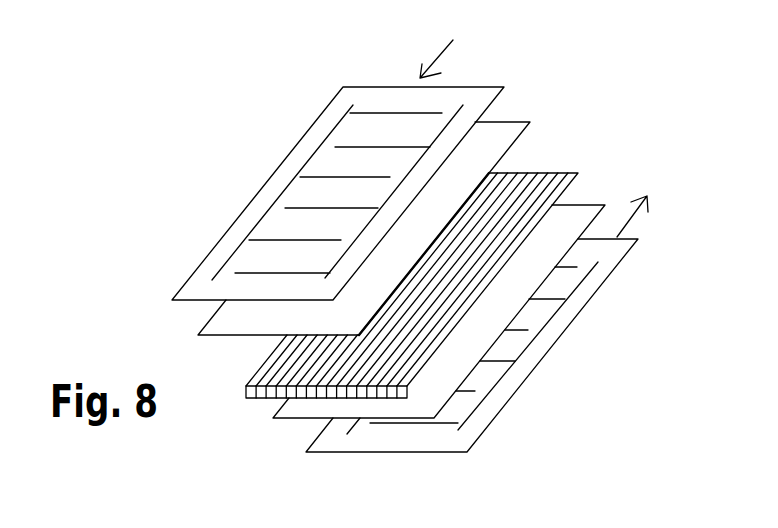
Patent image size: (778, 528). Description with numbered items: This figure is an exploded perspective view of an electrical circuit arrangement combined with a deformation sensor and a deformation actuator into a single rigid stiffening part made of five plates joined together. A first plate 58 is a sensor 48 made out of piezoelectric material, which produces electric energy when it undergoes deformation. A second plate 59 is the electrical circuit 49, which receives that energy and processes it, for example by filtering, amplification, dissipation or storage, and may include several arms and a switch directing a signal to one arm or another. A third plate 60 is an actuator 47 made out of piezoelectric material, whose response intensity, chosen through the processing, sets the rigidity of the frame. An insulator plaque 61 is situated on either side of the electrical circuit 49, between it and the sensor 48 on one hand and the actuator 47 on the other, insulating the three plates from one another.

The deformation actuator 47 is at (214, 262).
The deformation sensor 48 is at (592, 281).
The electrical circuit 49 is at (315, 383).
The first plate 58 is at (358, 97).
The second plate 59 is at (261, 393).
The third plate 60 is at (515, 380).
The insulator plaque 61 is at (503, 135).